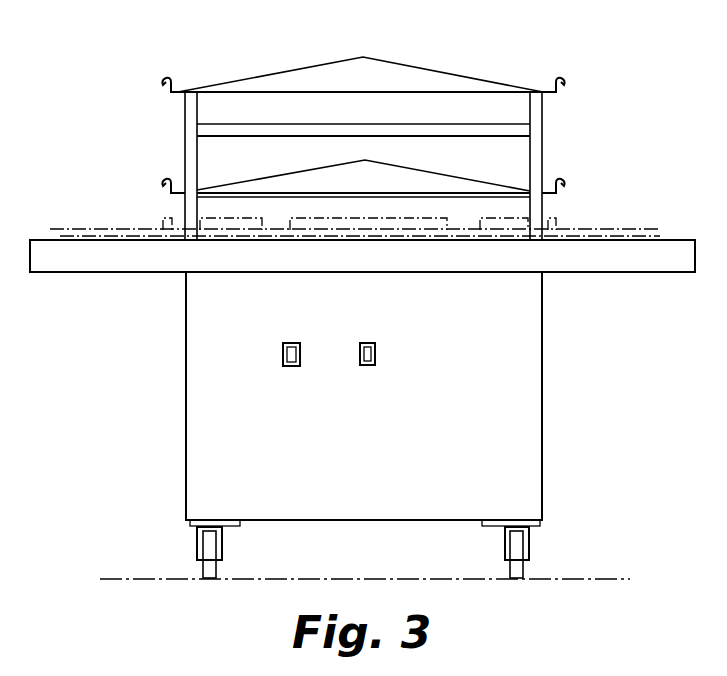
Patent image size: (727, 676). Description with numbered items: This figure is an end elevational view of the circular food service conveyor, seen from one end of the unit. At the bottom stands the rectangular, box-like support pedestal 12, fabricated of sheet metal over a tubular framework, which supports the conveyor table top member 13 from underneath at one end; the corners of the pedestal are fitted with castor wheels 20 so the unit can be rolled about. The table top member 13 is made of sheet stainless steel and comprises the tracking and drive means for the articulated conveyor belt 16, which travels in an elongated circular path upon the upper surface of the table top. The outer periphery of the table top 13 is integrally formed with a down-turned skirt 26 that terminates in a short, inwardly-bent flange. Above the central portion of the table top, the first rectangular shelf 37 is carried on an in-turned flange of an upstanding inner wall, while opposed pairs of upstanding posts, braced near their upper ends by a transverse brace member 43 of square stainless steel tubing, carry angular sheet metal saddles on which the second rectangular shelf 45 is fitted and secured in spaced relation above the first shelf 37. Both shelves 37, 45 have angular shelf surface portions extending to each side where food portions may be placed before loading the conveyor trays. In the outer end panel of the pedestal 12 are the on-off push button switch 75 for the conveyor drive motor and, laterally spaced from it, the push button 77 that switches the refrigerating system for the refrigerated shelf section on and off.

The box-like support pedestal 12 is at (548, 441).
The conveyor table top member 13 is at (43, 237).
The articulated conveyor belt 16 is at (104, 230).
The castor wheels 20 is at (523, 572).
The down-turned skirt 26 is at (140, 262).
The first rectangular shelf 37 is at (465, 160).
The transverse brace member 43 is at (312, 139).
The second rectangular shelf 45 is at (441, 70).
The on-off push button switch 75 is at (375, 360).
The push button 77 is at (296, 367).